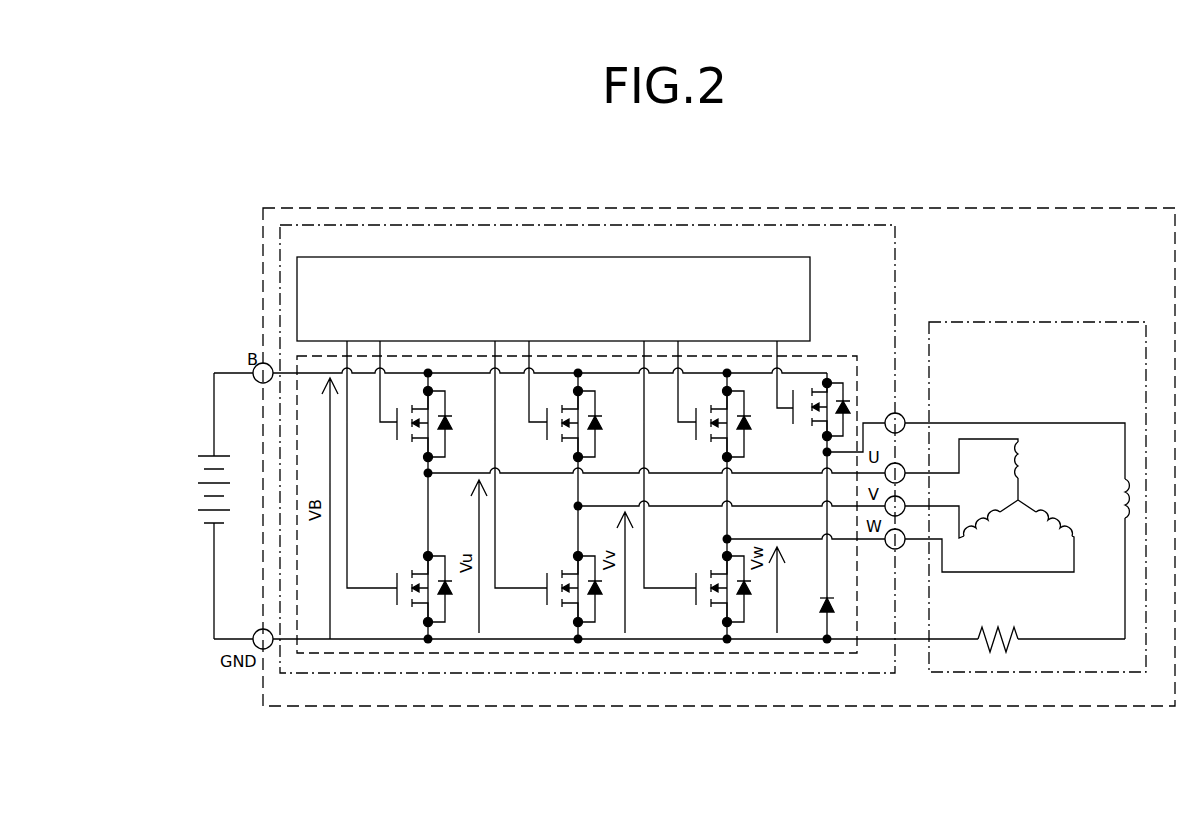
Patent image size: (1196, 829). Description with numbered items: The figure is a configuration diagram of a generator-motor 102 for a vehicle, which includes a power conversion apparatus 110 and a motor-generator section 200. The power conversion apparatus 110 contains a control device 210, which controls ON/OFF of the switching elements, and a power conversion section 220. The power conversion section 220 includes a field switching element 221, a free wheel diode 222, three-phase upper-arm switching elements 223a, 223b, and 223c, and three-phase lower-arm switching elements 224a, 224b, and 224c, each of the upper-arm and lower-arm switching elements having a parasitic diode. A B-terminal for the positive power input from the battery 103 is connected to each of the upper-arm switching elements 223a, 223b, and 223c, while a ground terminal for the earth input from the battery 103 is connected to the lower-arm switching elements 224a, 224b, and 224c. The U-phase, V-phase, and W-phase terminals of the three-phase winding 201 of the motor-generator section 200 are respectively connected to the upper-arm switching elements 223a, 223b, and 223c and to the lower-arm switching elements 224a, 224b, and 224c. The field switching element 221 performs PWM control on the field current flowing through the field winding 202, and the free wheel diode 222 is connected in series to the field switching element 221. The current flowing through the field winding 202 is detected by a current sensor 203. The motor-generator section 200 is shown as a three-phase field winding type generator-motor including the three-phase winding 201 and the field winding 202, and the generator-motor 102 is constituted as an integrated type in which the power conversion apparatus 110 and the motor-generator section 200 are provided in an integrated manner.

The generator-motor 102 is at (1032, 207).
The power conversion apparatus 110 is at (898, 265).
The motor-generator section 200 is at (1036, 323).
The control device 210 is at (810, 278).
The power conversion section 220 is at (817, 355).
The field switching element 221 is at (793, 420).
The free wheel diode 222 is at (822, 607).
The upper-arm switching element 223a is at (393, 430).
The upper-arm switching element 223b is at (543, 430).
The upper-arm switching element 223c is at (693, 430).
The lower-arm switching element 224a is at (395, 580).
The lower-arm switching element 224b is at (545, 580).
The lower-arm switching element 224c is at (695, 580).
The three-phase winding 201 is at (1024, 475).
The field winding 202 is at (1125, 487).
The current sensor 203 is at (1012, 633).
The battery 103 is at (202, 456).